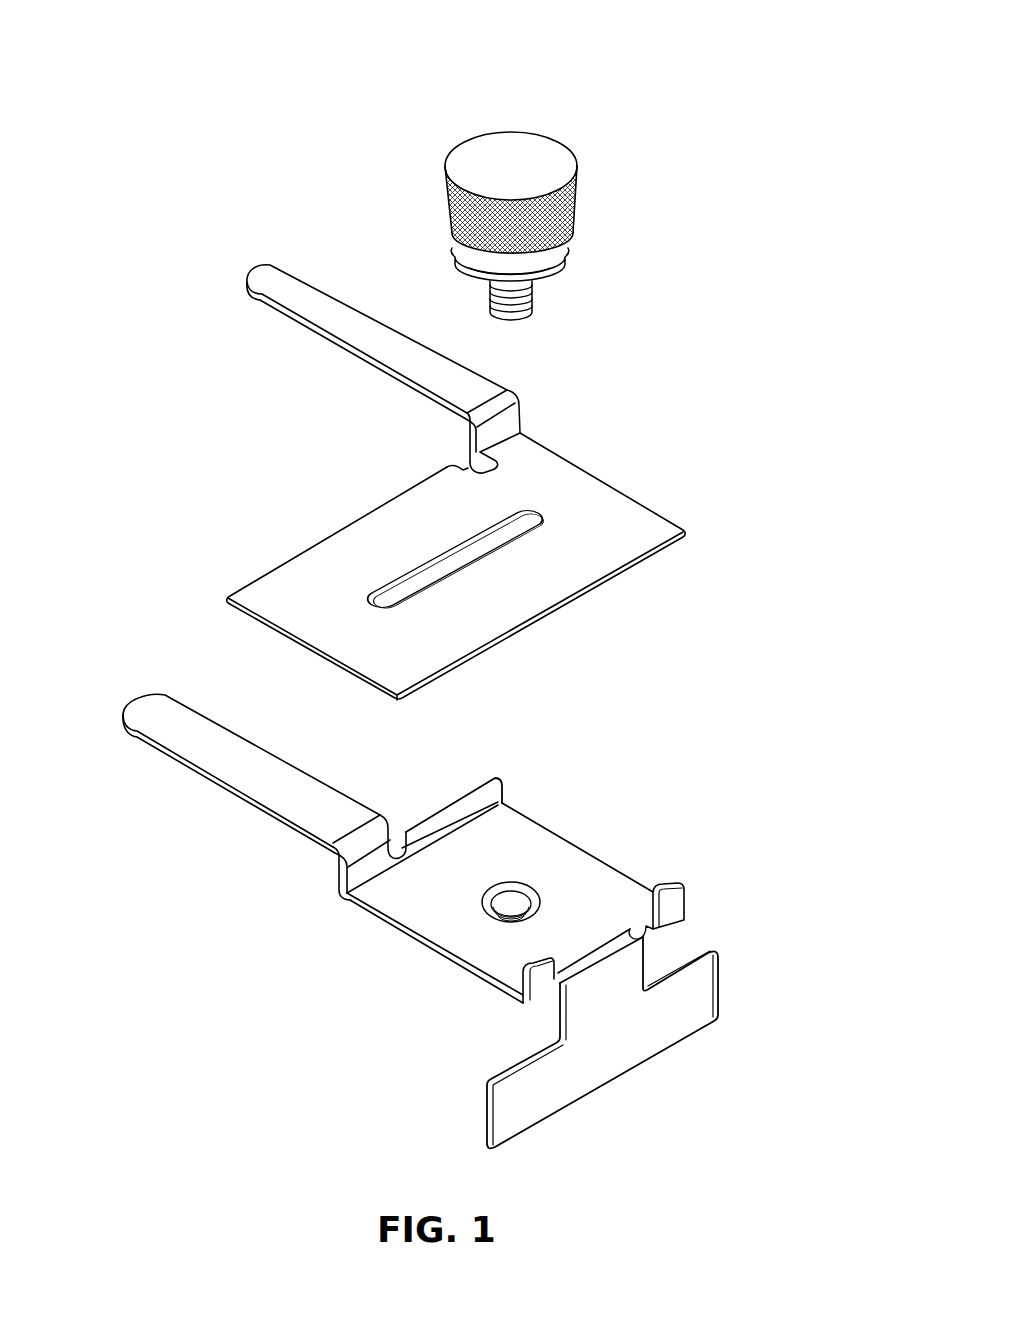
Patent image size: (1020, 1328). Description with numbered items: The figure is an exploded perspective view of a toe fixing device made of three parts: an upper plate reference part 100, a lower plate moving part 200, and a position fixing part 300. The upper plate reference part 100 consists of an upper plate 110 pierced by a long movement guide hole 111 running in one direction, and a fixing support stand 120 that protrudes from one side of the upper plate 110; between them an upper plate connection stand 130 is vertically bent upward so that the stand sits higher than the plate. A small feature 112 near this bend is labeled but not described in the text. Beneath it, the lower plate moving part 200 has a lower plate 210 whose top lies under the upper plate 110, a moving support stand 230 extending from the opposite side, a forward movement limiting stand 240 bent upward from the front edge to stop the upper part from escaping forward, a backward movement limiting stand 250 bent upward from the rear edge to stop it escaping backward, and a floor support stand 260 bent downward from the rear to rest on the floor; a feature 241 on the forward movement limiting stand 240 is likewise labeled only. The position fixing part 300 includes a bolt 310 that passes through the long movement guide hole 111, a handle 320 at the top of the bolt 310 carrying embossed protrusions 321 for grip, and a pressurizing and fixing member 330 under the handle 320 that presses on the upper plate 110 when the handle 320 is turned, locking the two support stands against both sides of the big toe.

The upper plate reference part 100 is at (305, 520).
The upper plate 110 is at (285, 568).
The long movement guide hole 111 is at (460, 563).
The hook portion 112 is at (460, 462).
The fixing support stand 120 is at (320, 300).
The upper plate connection stand 130 is at (540, 408).
The lower plate moving part 200 is at (597, 835).
The lower plate 210 is at (440, 925).
The moving support stand 230 is at (147, 705).
The forward movement limiting stand 240 is at (463, 787).
The notch 241 is at (390, 838).
The backward movement limiting stand 250 is at (690, 898).
The floor support stand 260 is at (620, 1048).
The position fixing part 300 is at (598, 83).
The bolt 310 is at (540, 302).
The handle 320 is at (525, 138).
The embossed protrusions 321 is at (575, 212).
The pressurizing and fixing member 330 is at (560, 262).